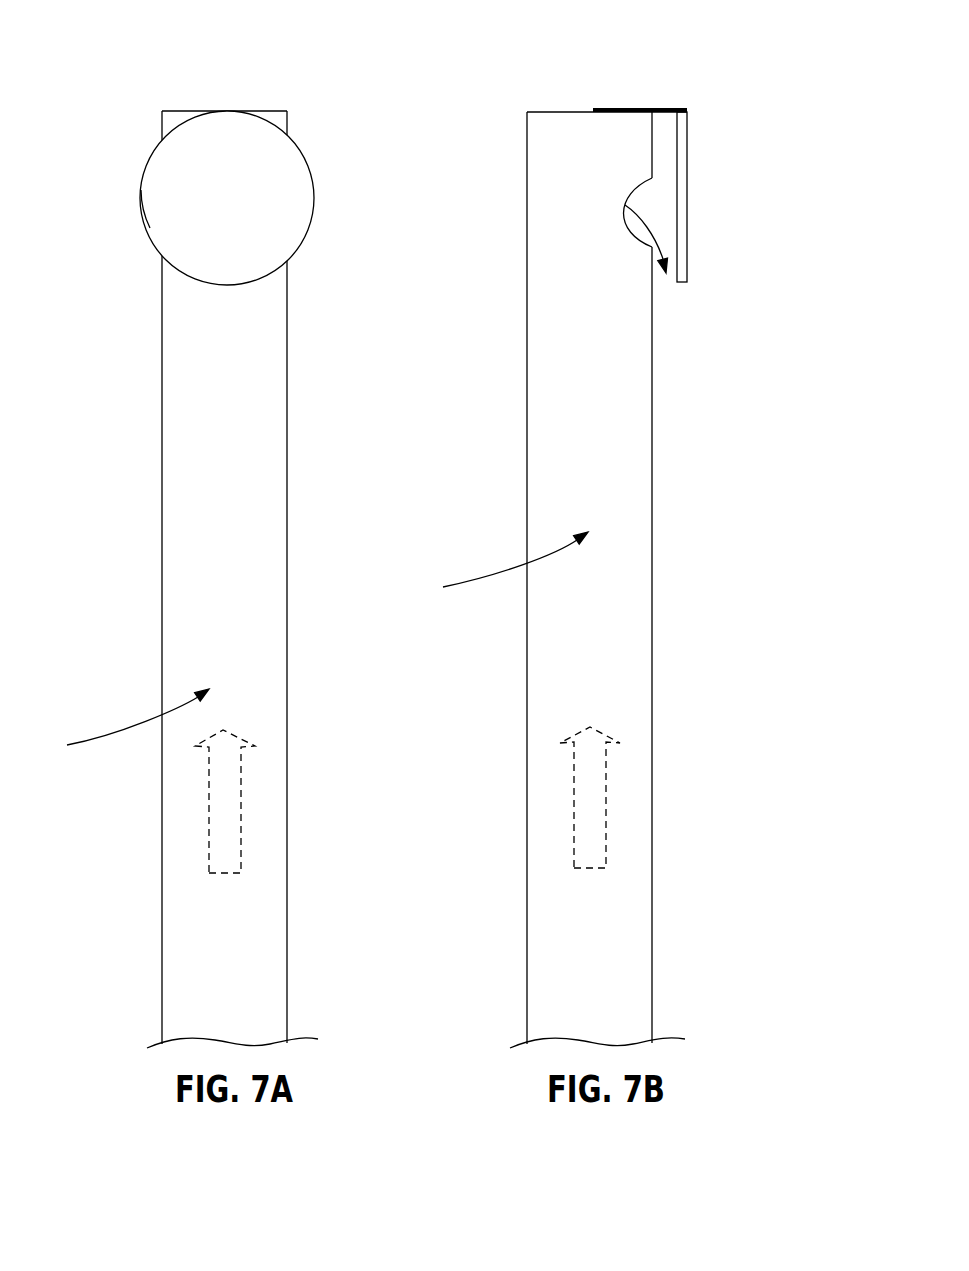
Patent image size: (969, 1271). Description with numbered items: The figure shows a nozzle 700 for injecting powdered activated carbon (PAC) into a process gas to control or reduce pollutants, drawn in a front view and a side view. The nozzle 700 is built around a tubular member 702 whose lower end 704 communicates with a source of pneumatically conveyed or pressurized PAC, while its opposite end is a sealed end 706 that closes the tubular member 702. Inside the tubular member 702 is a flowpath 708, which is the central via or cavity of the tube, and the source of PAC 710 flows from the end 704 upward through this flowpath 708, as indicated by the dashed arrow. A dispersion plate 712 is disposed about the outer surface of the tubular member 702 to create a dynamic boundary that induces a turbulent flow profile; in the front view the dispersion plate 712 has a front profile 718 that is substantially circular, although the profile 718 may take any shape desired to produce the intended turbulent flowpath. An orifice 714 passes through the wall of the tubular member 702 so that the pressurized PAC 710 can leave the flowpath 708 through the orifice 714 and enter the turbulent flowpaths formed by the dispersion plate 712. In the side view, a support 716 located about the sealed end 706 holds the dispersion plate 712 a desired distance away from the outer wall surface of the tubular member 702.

In FIG. 7A, the nozzle 700 is at (360, 245).
In FIG. 7B, the nozzle 700 is at (781, 214).
In FIG. 7A, the tubular member 702 is at (162, 687).
In FIG. 7B, the tubular member 702 is at (527, 727).
In FIG. 7A, the end 704 is at (123, 1019).
In FIG. 7B, the end 704 is at (498, 1019).
In FIG. 7A, the sealed end 706 is at (137, 119).
In FIG. 7B, the sealed end 706 is at (513, 120).
In FIG. 7A, the flowpath 708 is at (119, 723).
In FIG. 7B, the flowpath 708 is at (498, 565).
In FIG. 7A, the source of PAC 710 is at (220, 830).
In FIG. 7B, the source of PAC 710 is at (585, 825).
In FIG. 7A, the dispersion plate 712 is at (180, 245).
In FIG. 7B, the dispersion plate 712 is at (690, 222).
In FIG. 7B, the orifice 714 is at (648, 168).
In FIG. 7B, the support 716 is at (642, 110).
In FIG. 7A, the front profile 718 is at (150, 219).